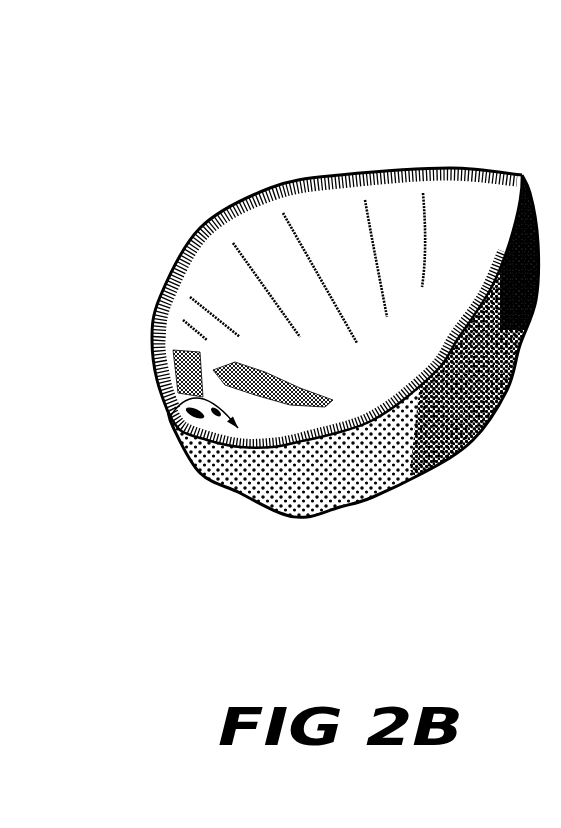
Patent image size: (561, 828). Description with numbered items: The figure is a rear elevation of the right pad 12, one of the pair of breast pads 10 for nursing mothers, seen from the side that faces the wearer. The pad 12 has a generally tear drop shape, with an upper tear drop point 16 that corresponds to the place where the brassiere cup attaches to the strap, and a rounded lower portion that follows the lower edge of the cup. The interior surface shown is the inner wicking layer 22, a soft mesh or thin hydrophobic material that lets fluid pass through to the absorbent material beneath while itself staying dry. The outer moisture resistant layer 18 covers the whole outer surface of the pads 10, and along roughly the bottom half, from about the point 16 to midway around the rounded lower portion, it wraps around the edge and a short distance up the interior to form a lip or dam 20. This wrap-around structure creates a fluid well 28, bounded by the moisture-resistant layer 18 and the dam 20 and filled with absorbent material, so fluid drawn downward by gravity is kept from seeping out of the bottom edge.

The breast pads 10 is at (55, 50).
The right pad 12 is at (398, 122).
The upper tear drop point 16 is at (522, 176).
The outer moisture resistant layer 18 is at (303, 493).
The lip or dam 20 is at (458, 437).
The inner wicking layer 22 is at (180, 325).
The fluid well 28 is at (180, 416).